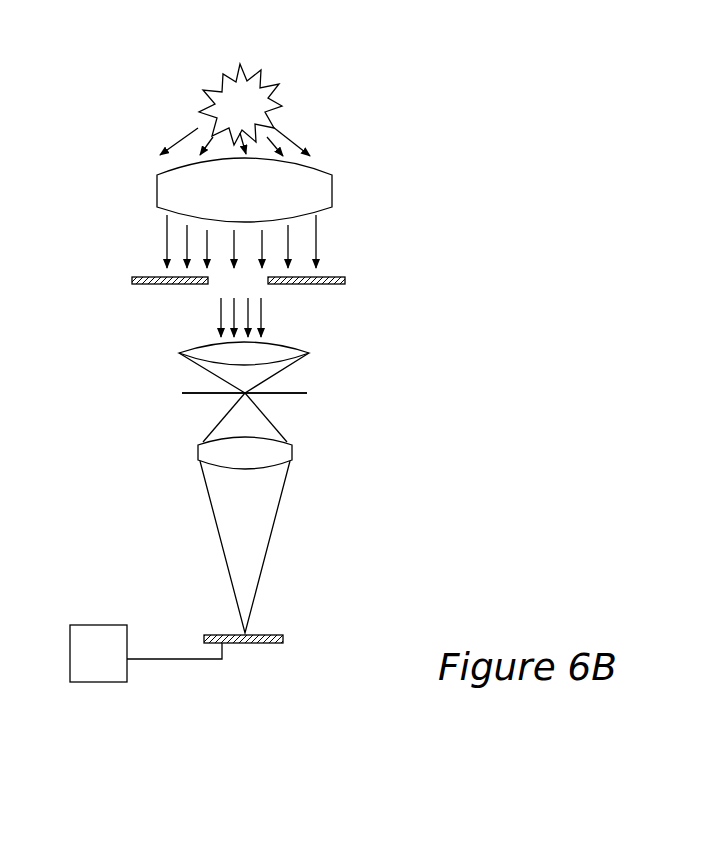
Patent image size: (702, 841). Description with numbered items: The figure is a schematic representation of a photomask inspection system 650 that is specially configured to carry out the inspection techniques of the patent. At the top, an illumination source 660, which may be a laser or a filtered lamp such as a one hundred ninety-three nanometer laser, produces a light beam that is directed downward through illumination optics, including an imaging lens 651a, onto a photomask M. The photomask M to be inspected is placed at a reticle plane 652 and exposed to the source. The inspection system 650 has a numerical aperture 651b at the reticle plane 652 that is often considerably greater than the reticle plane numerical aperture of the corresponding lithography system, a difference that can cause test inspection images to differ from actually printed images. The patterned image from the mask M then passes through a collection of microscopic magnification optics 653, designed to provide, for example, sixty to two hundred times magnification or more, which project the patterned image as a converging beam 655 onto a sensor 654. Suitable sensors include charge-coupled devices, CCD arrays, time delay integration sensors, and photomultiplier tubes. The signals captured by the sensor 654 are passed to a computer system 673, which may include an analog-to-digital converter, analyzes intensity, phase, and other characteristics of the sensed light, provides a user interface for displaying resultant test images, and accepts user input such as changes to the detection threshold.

The inspection system 650 is at (355, 98).
The illumination source 660 is at (265, 80).
The imaging lens 651a is at (110, 148).
The numerical aperture 651b is at (273, 377).
The reticle plane 652 is at (175, 394).
The photomask M is at (288, 397).
The magnification optics 653 is at (152, 400).
The focused light beam 655 is at (242, 533).
The sensor 654 is at (265, 632).
The computer system 673 is at (146, 653).